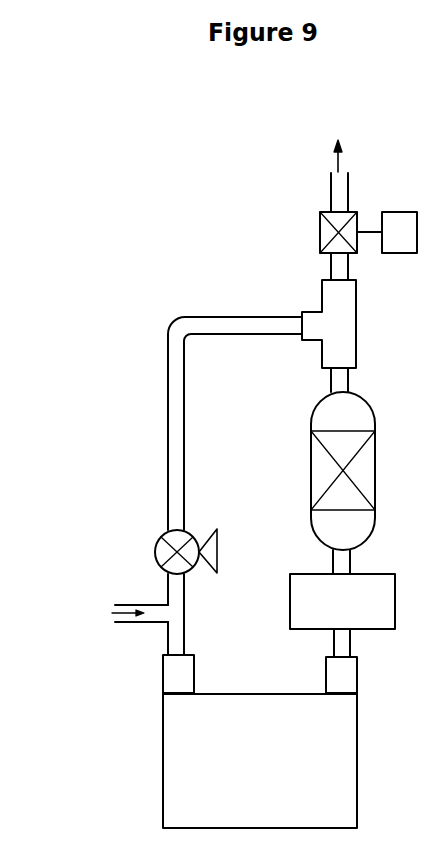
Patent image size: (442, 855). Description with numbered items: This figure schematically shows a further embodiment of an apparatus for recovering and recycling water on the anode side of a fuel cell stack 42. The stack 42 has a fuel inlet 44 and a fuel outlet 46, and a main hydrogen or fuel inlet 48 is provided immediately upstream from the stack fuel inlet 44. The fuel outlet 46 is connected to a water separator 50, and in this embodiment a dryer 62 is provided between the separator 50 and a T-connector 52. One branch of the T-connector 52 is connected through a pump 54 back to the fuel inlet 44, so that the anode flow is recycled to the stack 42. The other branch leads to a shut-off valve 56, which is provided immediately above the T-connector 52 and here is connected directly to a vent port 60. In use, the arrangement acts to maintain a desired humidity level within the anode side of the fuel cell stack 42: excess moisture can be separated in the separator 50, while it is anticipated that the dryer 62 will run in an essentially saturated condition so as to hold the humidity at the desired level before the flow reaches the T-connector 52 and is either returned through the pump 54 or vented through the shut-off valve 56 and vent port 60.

The fuel cell stack 42 is at (260, 761).
The fuel inlet 44 is at (195, 676).
The fuel outlet 46 is at (326, 678).
The main hydrogen or fuel inlet 48 is at (158, 624).
The water separator 50 is at (312, 578).
The T-connector 52 is at (350, 314).
The pump 54 is at (160, 549).
The shut-off valve 56 is at (322, 232).
The vent port 60 is at (330, 190).
The dryer 62 is at (318, 456).